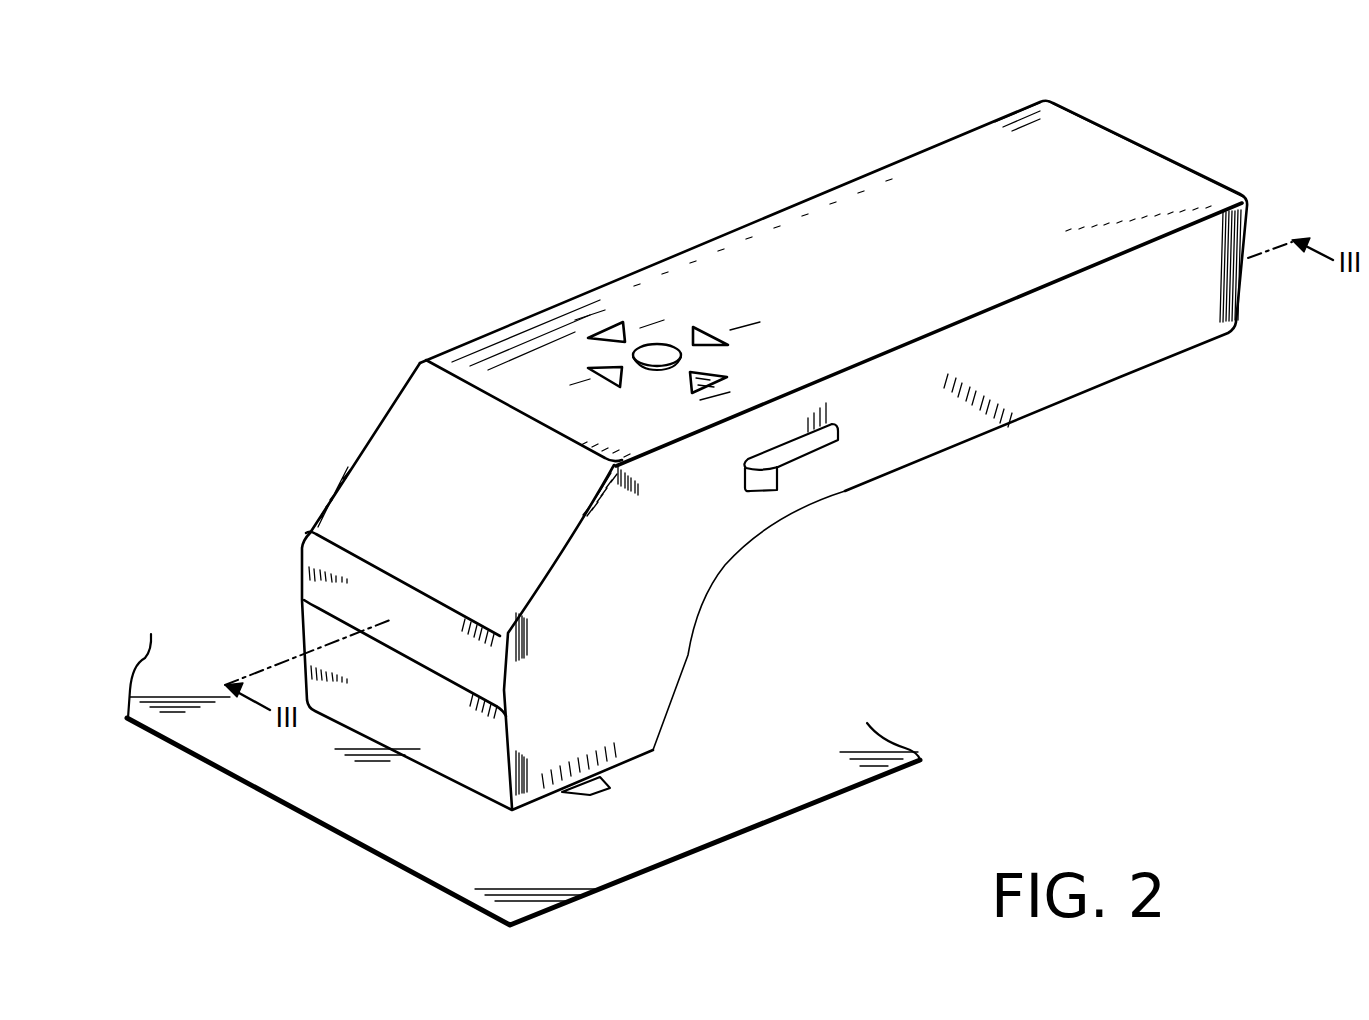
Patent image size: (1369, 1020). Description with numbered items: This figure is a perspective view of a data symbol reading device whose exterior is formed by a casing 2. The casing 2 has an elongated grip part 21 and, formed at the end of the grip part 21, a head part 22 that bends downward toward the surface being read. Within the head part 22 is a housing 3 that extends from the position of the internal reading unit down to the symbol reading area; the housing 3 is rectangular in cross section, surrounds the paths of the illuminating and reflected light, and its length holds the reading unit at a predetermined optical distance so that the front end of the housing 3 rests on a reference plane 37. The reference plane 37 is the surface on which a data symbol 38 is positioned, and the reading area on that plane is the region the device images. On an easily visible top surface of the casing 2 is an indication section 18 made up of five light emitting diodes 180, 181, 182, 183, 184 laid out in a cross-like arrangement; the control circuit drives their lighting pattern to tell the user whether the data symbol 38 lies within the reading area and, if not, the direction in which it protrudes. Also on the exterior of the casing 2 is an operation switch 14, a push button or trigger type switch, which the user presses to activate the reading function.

The casing 2 is at (827, 224).
The housing 3 is at (657, 662).
The operation switch 14 is at (797, 467).
The indication section 18 is at (667, 301).
The grip part 21 is at (1092, 168).
The head part 22 is at (400, 455).
The reference plane 37 is at (783, 797).
The data symbol 38 is at (582, 792).
The light emitting diode 180 is at (657, 360).
The light emitting diode 181 is at (707, 369).
The light emitting diode 182 is at (608, 322).
The light emitting diode 183 is at (590, 378).
The light emitting diode 184 is at (707, 330).